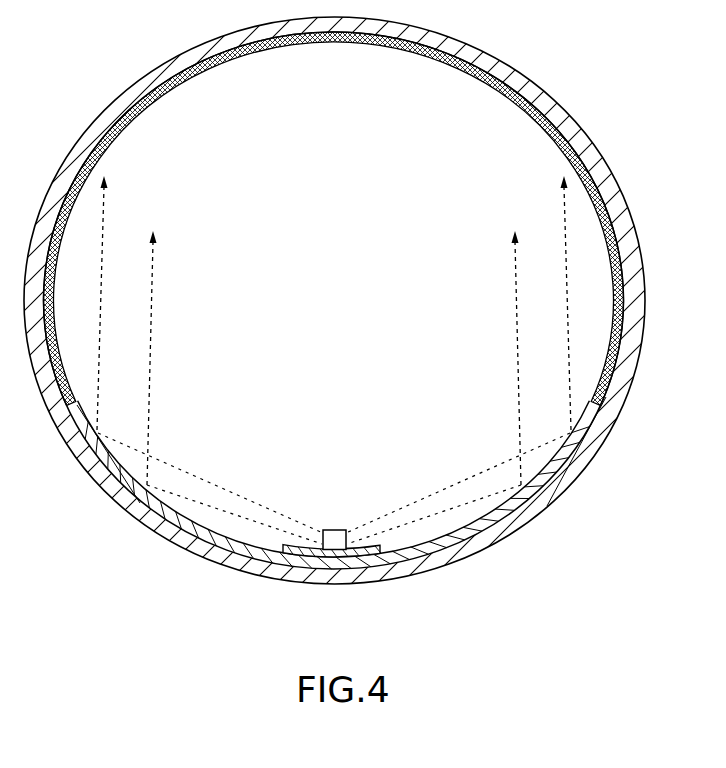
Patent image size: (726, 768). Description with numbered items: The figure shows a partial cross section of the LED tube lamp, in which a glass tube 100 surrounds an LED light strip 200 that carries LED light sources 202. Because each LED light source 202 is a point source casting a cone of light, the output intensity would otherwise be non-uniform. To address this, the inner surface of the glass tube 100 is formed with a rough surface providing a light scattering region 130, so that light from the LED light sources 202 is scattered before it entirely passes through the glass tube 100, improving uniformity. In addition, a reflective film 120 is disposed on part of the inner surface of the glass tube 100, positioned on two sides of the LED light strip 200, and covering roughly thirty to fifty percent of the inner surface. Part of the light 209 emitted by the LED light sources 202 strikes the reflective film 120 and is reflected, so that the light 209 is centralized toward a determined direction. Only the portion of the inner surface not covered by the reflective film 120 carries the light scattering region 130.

The glass tube 100 is at (158, 536).
The reflective film 120 is at (438, 545).
The light scattering region 130 is at (277, 46).
The LED light strip 200 is at (291, 557).
The LED light source 202 is at (334, 541).
The light 209 is at (556, 499).